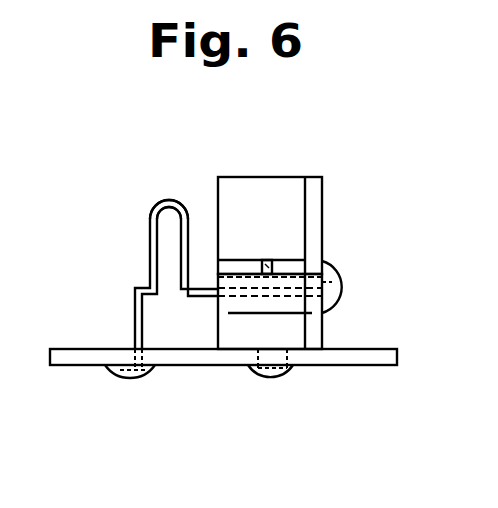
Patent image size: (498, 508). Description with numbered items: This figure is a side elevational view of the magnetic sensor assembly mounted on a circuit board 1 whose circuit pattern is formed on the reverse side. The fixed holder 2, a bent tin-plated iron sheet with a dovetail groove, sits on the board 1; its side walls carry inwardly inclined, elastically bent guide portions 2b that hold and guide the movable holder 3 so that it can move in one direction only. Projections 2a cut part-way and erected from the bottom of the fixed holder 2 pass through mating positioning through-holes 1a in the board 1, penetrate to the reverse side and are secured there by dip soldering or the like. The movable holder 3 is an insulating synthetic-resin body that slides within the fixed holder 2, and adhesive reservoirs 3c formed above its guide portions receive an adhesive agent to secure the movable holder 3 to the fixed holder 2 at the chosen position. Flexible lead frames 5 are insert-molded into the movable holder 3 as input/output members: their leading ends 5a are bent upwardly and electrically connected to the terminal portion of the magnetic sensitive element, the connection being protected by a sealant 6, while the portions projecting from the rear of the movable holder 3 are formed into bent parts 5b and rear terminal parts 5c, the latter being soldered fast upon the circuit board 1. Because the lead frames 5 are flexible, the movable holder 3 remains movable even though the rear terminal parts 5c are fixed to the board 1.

The circuit board 1 is at (80, 348).
The positioning through-hole 1a is at (262, 377).
The fixed holder 2 is at (313, 333).
The projection 2a is at (285, 377).
The guide portion 2b is at (342, 298).
The movable holder 3 is at (275, 183).
The adhesive reservoir 3c is at (272, 262).
The lead frame 5 is at (148, 263).
The leading end of lead frame 5a is at (328, 282).
The bent part 5b is at (160, 198).
The rear terminal part 5c is at (128, 378).
The sealant 6 is at (338, 267).